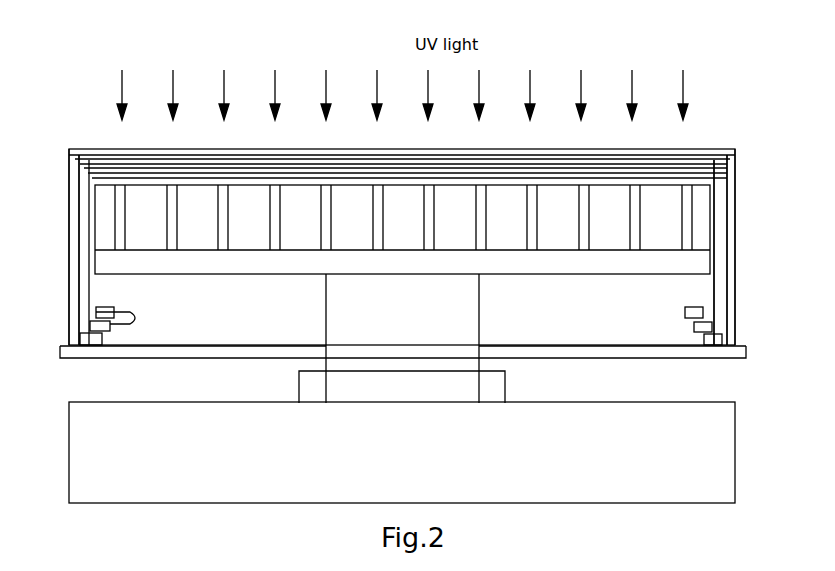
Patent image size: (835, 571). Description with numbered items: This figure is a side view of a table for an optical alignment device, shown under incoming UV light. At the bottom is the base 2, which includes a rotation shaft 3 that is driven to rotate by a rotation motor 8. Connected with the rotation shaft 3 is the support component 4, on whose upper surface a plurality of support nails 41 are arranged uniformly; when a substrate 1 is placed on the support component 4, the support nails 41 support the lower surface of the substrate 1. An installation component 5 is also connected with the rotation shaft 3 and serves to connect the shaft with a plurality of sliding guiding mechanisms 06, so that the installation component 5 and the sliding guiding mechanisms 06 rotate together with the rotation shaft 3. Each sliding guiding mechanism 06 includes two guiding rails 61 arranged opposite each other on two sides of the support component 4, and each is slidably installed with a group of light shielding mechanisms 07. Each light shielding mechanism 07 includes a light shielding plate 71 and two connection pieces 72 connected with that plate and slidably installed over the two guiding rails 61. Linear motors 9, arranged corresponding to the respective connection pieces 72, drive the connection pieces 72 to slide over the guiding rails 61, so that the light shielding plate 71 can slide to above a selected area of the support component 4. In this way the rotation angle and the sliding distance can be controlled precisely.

The substrate 1 is at (270, 188).
The support nails 41 is at (383, 193).
The support component 4 is at (495, 248).
The rotation shaft 3 is at (326, 300).
The installation component 5 is at (553, 345).
The base 2 is at (623, 402).
The rotation motor 8 is at (299, 384).
The linear motors 9 is at (114, 313).
The guiding rails 61 is at (92, 326).
The sliding guiding mechanisms 06 is at (730, 340).
The light shielding mechanisms 07 is at (738, 152).
The light shielding plate 71 is at (78, 164).
The connection pieces 72 is at (727, 222).